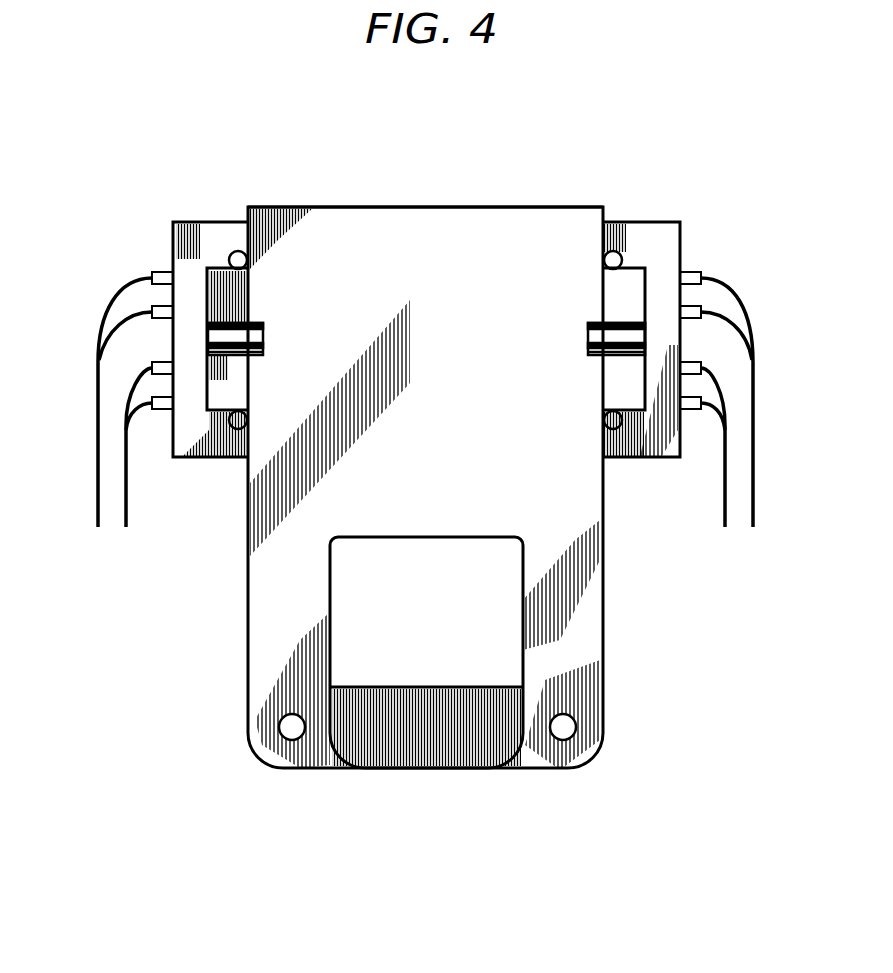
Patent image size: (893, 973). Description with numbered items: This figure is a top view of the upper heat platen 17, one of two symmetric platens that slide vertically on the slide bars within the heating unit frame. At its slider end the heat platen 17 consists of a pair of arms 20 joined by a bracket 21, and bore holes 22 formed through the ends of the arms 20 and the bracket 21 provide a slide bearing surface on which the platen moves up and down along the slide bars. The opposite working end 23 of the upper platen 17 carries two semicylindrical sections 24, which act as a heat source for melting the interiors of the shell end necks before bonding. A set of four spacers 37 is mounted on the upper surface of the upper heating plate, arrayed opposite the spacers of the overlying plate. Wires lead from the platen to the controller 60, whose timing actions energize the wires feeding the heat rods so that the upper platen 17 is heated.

The upper heat platen 17 is at (487, 843).
The arms 20 is at (248, 676).
The bracket 21 is at (364, 770).
The bore holes 22 is at (288, 732).
The working end 23 is at (421, 207).
The semicylindrical sections 24 is at (240, 323).
The spacers 37 is at (617, 254).
The controller 60 is at (85, 529).